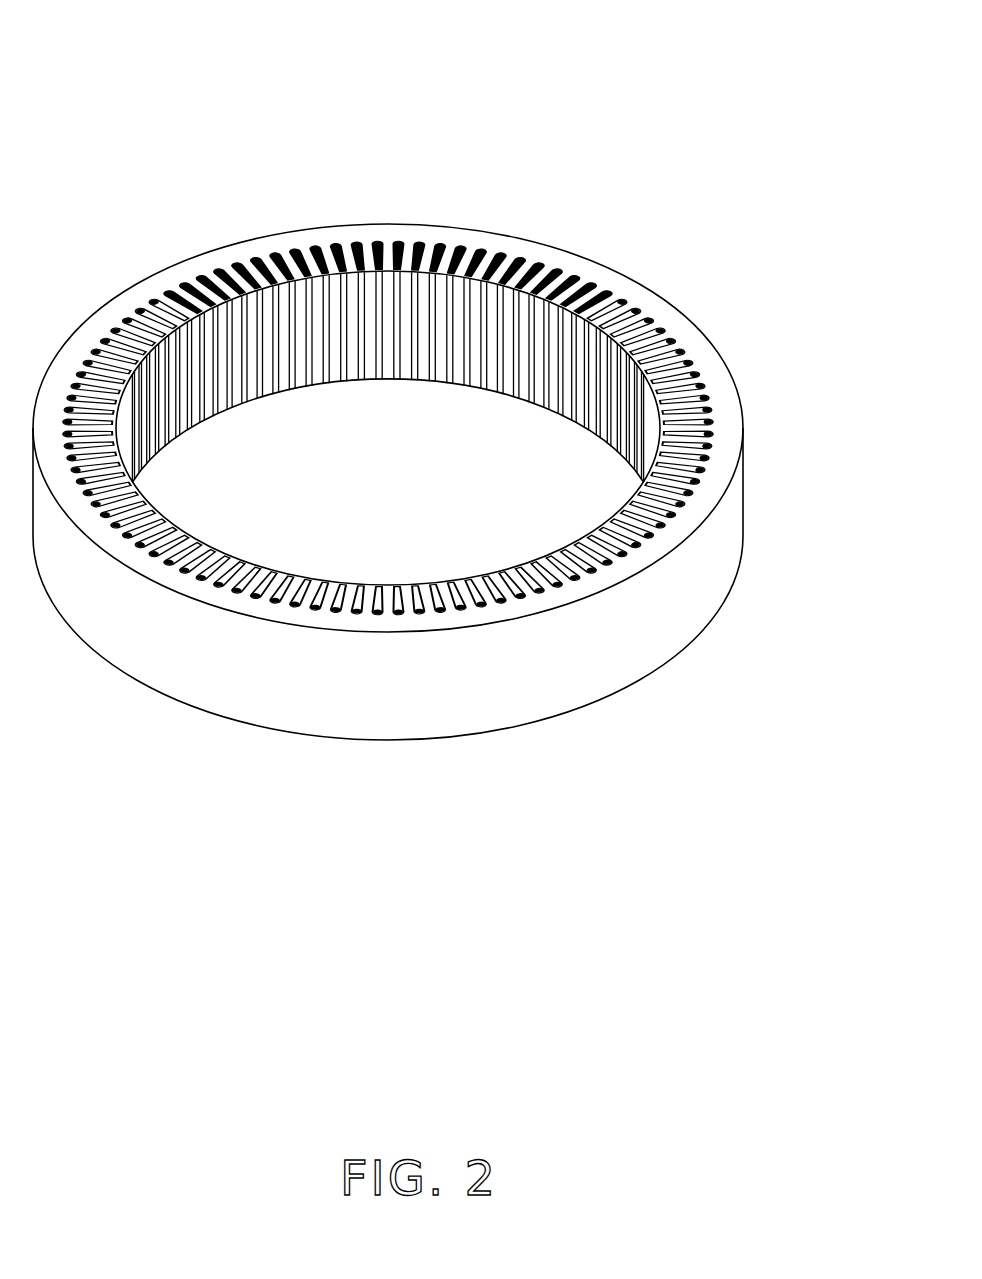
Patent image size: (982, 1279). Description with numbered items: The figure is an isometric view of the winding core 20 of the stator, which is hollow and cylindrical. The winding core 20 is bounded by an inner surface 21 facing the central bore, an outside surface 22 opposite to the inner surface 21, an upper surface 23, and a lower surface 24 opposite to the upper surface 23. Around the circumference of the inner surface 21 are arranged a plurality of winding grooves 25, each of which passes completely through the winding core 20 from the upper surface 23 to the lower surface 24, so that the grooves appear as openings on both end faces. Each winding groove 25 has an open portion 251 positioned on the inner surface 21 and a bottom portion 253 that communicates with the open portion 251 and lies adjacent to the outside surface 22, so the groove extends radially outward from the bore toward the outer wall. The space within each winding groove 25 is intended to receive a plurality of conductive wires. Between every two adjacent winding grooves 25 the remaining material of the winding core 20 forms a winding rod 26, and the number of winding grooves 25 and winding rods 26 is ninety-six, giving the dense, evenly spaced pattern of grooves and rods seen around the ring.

The winding core 20 is at (421, 40).
The inner surface 21 is at (507, 300).
The outside surface 22 is at (727, 530).
The upper surface 23 is at (707, 365).
The lower surface 24 is at (663, 670).
The winding groove 25 is at (192, 288).
The open portion 251 is at (243, 305).
The bottom portion 253 is at (218, 273).
The winding rod 26 is at (167, 289).